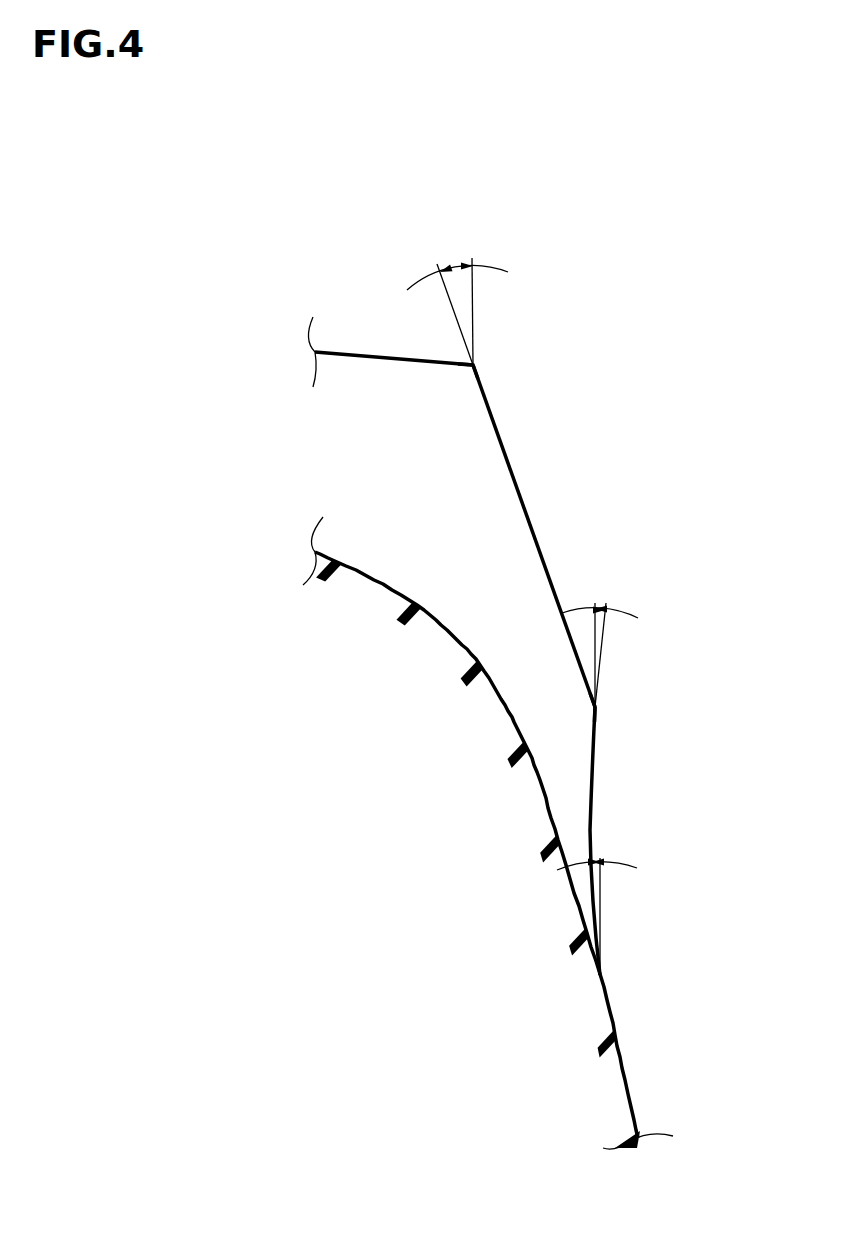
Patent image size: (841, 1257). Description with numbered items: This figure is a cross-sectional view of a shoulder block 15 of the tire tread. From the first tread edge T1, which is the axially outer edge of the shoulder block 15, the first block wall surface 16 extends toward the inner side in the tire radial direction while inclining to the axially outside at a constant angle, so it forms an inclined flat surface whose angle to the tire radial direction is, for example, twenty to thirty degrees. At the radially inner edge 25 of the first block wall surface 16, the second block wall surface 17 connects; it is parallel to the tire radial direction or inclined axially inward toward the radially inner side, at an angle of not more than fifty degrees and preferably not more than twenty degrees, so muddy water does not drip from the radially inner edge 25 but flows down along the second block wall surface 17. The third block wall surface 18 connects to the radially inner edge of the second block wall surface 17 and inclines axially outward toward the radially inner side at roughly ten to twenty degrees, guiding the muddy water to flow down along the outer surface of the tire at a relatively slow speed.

The shoulder block 15 is at (356, 340).
The first block wall surface 16 is at (507, 460).
The second block wall surface 17 is at (595, 725).
The third block wall surface 18 is at (592, 828).
The radially inner edge 25 is at (597, 707).
The first tread edge T1 is at (475, 363).